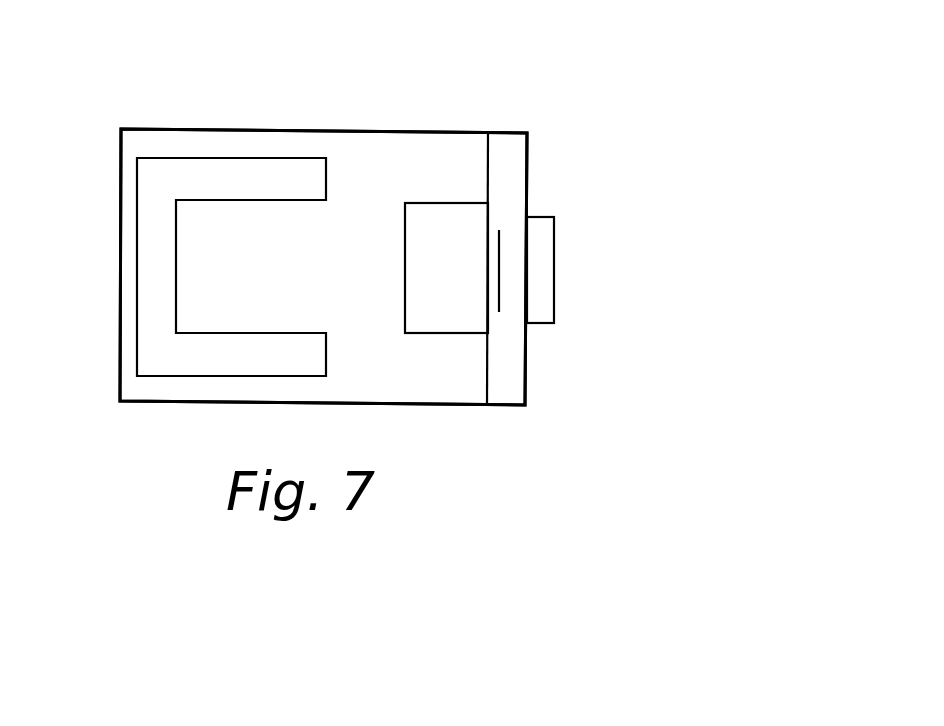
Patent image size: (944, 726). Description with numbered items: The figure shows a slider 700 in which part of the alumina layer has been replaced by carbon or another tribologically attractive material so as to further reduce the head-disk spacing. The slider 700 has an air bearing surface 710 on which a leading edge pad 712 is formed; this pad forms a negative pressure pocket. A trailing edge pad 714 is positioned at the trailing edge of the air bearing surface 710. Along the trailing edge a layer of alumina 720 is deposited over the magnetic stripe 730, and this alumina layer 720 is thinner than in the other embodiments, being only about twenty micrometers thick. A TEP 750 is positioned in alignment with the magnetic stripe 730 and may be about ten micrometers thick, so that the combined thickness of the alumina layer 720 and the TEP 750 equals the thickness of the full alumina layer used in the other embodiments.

The slider 700 is at (494, 68).
The air bearing surface 710 is at (362, 195).
The leading edge pad 712 is at (137, 180).
The trailing edge pad 714 is at (463, 336).
The alumina layer 720 is at (528, 168).
The magnetic stripe 730 is at (500, 289).
The TEP 750 is at (554, 233).